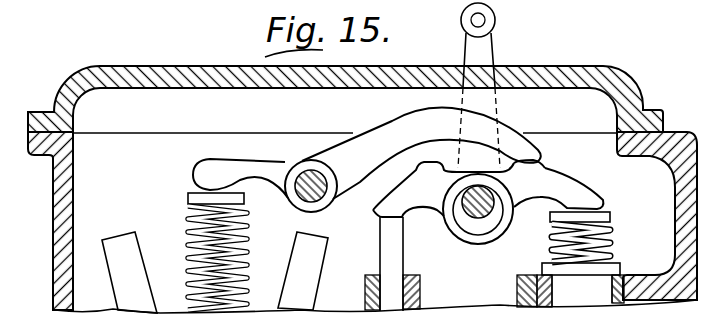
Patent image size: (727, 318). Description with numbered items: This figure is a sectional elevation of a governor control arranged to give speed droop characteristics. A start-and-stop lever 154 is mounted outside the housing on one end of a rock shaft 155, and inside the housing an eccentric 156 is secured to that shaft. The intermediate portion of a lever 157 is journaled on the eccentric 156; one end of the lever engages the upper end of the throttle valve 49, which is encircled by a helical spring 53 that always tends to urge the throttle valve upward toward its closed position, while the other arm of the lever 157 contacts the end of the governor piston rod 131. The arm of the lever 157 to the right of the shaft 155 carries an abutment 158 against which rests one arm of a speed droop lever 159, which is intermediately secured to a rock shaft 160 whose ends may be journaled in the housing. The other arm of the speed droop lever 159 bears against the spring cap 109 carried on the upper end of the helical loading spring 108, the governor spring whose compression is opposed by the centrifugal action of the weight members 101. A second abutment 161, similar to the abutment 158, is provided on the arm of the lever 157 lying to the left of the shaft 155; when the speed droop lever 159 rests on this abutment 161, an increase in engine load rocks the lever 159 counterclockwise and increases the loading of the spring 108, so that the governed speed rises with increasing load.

The start-and-stop lever 154 is at (490, 54).
The speed droop lever 159 is at (323, 151).
The rock shaft 160 is at (326, 173).
The abutment 161 is at (431, 168).
The abutment 158 is at (540, 167).
The lever 157 is at (568, 184).
The eccentric 156 is at (489, 224).
The rock shaft 155 is at (476, 208).
The piston rod 131 is at (400, 258).
The spring cap 109 is at (187, 198).
The helical loading spring 108 is at (247, 237).
The weight members 101 is at (300, 281).
The throttle valve 49 is at (612, 217).
The helical spring 53 is at (612, 241).